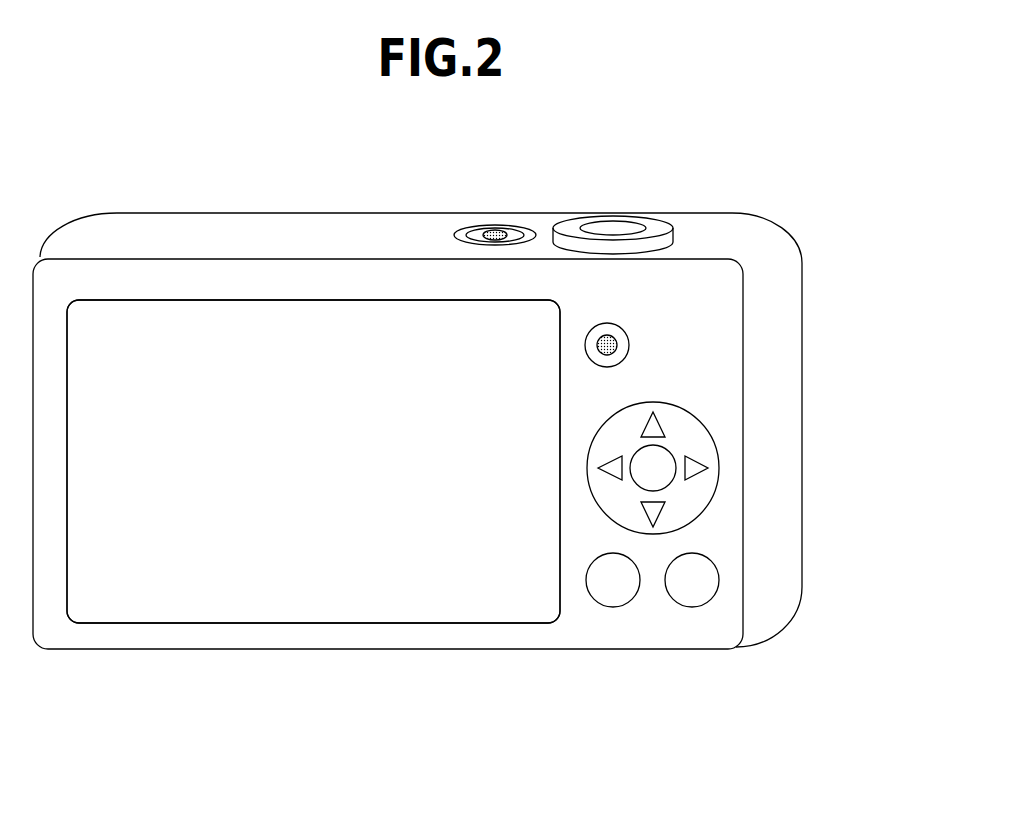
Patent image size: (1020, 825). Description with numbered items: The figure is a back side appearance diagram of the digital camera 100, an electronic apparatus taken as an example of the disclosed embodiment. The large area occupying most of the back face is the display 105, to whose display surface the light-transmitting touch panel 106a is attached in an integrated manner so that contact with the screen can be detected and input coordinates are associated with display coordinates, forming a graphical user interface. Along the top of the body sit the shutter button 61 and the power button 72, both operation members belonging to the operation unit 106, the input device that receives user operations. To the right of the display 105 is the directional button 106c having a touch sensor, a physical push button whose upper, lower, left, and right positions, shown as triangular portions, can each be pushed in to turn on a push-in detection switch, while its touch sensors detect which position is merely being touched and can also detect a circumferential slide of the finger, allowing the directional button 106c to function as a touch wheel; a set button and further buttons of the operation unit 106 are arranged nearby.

The digital camera 100 is at (296, 680).
The display 105 is at (263, 330).
The touch panel 106a is at (313, 461).
The power button 72 is at (495, 230).
The shutter button 61 is at (613, 225).
The directional button 106c is at (622, 440).
The operation unit 106 is at (655, 245).